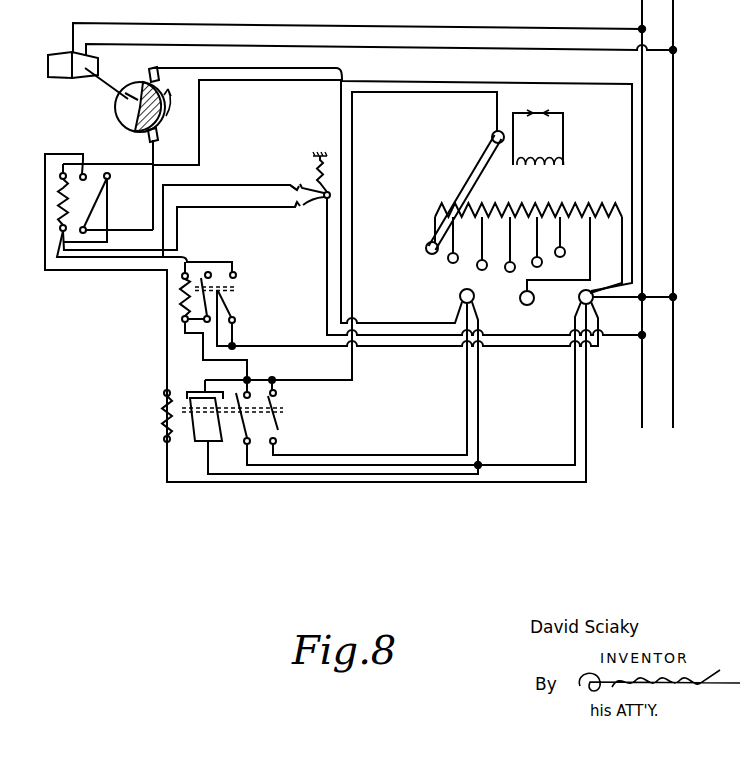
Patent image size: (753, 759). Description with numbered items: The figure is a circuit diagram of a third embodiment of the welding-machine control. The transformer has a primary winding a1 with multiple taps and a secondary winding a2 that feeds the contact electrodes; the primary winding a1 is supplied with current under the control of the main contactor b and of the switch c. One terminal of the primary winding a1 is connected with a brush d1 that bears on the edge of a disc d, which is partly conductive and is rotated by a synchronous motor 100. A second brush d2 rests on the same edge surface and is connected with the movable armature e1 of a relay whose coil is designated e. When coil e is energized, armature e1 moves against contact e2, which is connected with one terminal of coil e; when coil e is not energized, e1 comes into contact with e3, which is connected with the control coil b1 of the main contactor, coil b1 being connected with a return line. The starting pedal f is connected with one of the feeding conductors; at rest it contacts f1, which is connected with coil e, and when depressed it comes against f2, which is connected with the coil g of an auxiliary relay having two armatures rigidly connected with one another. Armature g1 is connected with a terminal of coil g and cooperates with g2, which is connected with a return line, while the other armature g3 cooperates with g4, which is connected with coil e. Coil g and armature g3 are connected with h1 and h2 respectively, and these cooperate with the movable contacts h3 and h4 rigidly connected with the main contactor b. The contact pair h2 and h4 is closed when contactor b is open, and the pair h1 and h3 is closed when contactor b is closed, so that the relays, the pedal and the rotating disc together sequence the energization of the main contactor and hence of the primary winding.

The synchronous motor 100 is at (63, 58).
The disc d is at (118, 113).
The brush d1 is at (152, 68).
The brush d2 is at (148, 138).
The relay coil e is at (58, 197).
The movable armature e1 is at (107, 204).
The relay contact e2 is at (110, 177).
The relay contact e3 is at (83, 163).
The starting pedal f is at (317, 201).
The pedal rest contact f1 is at (290, 187).
The pedal depressed contact f2 is at (293, 209).
The auxiliary relay coil g is at (183, 285).
The auxiliary relay armature g1 is at (205, 300).
The auxiliary relay contact g2 is at (210, 273).
The auxiliary relay armature g3 is at (234, 311).
The auxiliary relay contact g4 is at (237, 276).
The contactor contact h1 is at (251, 397).
The contactor contact h2 is at (276, 388).
The movable contact h3 is at (250, 434).
The movable contact h4 is at (280, 432).
The main contactor b is at (220, 423).
The control coil b1 is at (163, 413).
The switch c is at (472, 178).
The primary winding a1 is at (542, 206).
The secondary winding a2 is at (538, 137).